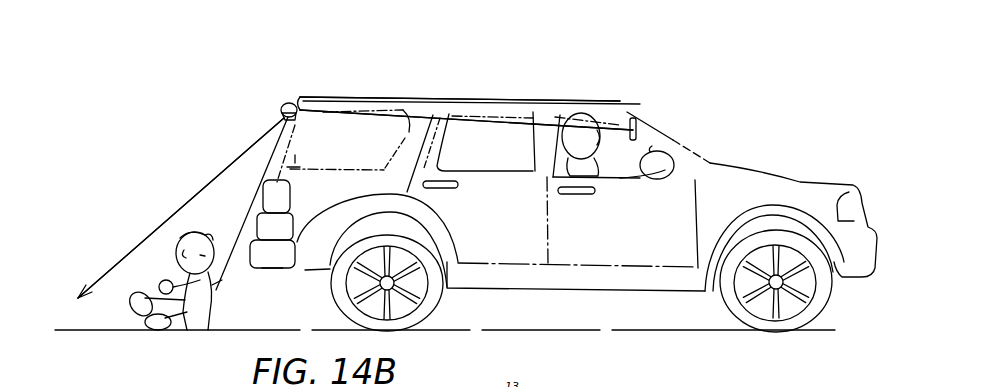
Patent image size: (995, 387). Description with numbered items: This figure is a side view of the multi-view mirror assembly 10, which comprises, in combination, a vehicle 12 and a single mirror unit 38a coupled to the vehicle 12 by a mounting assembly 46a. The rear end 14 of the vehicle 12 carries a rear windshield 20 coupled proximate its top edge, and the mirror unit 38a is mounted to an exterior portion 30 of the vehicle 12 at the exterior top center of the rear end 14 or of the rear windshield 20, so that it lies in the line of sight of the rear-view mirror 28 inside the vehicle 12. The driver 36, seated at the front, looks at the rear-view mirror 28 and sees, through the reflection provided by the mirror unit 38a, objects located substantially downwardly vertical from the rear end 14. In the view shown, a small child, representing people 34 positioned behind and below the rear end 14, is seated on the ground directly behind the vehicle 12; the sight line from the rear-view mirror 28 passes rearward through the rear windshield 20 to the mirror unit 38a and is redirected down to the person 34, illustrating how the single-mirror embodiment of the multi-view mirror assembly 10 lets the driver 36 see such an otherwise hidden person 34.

The multi-view mirror assembly 10 is at (262, 100).
The vehicle 12 is at (619, 225).
The rear end 14 is at (262, 210).
The rear windshield 20 is at (290, 142).
The rear-view mirror 28 is at (637, 117).
The exterior portion 30 is at (320, 203).
The people 34 is at (187, 233).
The driver 36 is at (575, 120).
The mirror unit 38a is at (292, 100).
The mounting assembly 46a is at (340, 97).